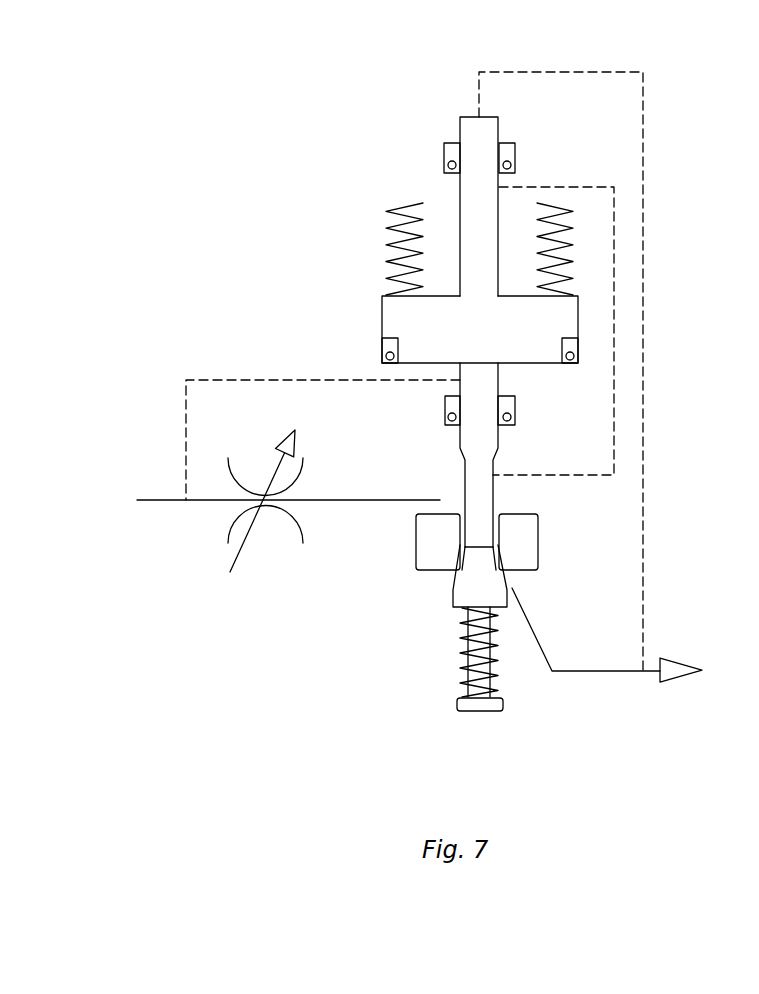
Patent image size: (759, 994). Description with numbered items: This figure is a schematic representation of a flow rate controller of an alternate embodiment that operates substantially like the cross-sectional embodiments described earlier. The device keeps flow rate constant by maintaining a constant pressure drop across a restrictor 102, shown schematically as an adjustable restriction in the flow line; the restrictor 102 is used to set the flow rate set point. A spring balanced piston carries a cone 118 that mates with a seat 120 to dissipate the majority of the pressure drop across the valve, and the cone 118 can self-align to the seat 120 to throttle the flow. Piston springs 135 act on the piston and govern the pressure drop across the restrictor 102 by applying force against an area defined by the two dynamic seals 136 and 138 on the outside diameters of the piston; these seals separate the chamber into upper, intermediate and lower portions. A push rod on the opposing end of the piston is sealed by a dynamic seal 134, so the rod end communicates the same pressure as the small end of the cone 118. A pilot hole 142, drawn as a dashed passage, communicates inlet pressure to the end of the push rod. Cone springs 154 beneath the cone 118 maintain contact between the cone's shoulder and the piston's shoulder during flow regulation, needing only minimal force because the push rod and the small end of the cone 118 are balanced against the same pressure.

The restrictor 102 is at (278, 535).
The cone 118 is at (497, 592).
The seat 120 is at (527, 548).
The dynamic seal 134 is at (515, 424).
The piston springs 135 is at (390, 245).
The dynamic seal 136 is at (444, 170).
The dynamic seal 138 is at (383, 360).
The pilot hole 142 is at (643, 157).
The cone springs 154 is at (458, 672).